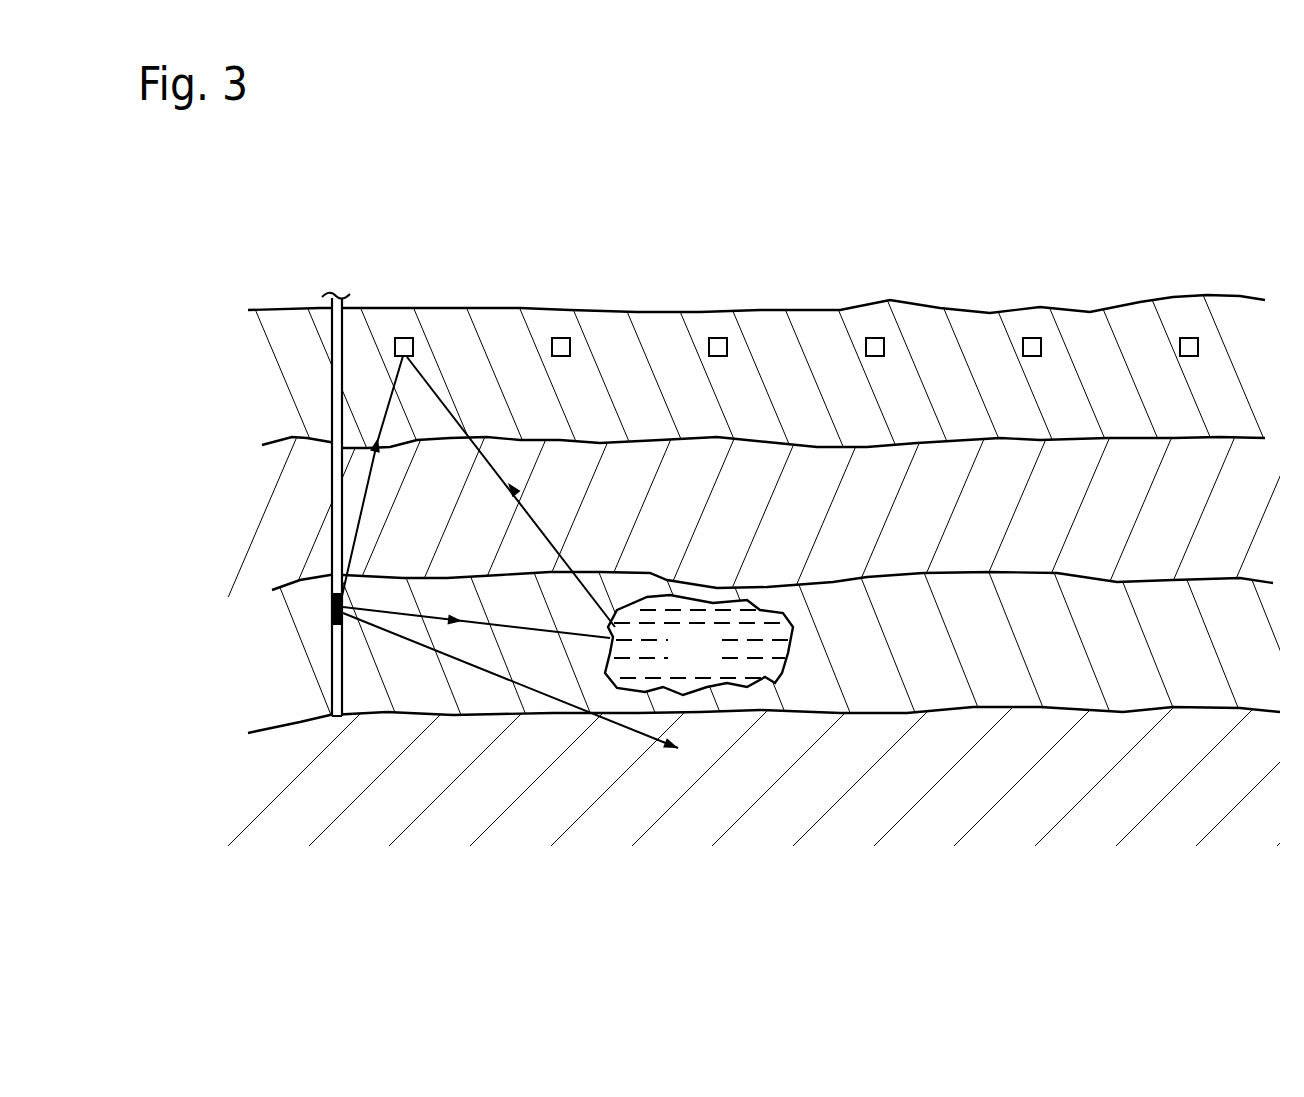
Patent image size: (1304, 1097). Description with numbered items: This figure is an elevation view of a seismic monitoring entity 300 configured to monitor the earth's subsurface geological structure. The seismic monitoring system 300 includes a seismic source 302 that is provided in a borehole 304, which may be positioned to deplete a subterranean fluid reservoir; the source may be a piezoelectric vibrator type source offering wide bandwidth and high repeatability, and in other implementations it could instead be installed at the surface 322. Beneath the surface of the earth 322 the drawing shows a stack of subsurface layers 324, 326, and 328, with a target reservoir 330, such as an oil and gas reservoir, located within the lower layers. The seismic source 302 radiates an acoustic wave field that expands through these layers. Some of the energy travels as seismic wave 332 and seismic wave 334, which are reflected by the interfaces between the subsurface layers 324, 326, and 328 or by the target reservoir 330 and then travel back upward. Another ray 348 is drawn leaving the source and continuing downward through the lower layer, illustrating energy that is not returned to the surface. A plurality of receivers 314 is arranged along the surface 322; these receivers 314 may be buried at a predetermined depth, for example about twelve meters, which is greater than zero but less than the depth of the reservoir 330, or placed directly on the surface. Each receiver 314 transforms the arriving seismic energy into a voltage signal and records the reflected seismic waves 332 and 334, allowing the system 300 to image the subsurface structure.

The seismic monitoring entity 300 is at (1078, 141).
The seismic source 302 is at (331, 612).
The borehole 304 is at (332, 391).
The receivers 314 is at (405, 337).
The surface of the earth 322 is at (953, 308).
The subsurface layer 324 is at (1254, 388).
The subsurface layer 326 is at (1254, 526).
The subsurface layer 328 is at (1255, 636).
The target reservoir 330 is at (717, 660).
The seismic wave 332 is at (360, 513).
The seismic wave 334 is at (509, 627).
The downgoing seismic ray path 348 is at (612, 723).